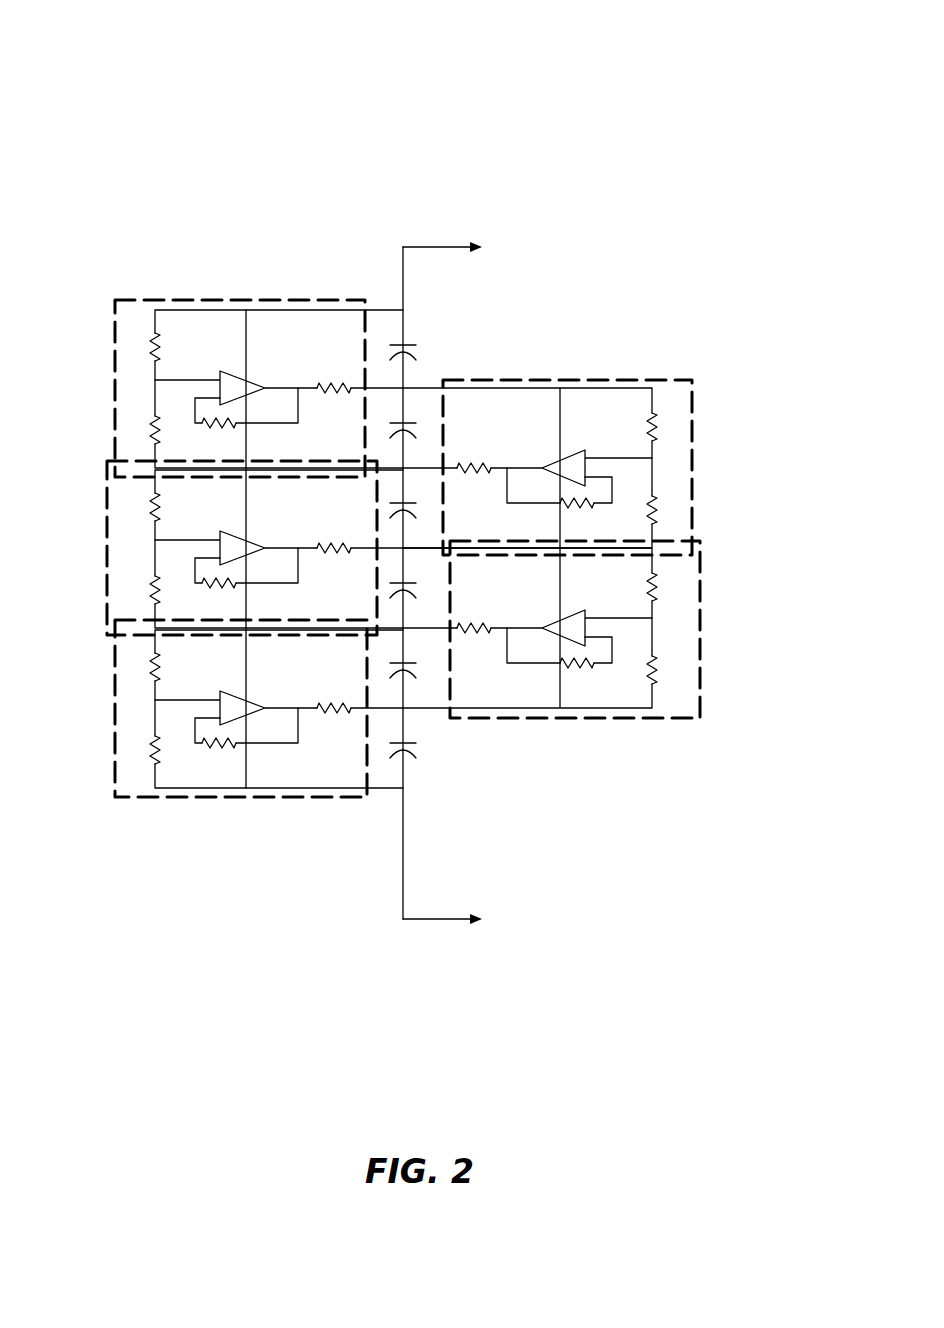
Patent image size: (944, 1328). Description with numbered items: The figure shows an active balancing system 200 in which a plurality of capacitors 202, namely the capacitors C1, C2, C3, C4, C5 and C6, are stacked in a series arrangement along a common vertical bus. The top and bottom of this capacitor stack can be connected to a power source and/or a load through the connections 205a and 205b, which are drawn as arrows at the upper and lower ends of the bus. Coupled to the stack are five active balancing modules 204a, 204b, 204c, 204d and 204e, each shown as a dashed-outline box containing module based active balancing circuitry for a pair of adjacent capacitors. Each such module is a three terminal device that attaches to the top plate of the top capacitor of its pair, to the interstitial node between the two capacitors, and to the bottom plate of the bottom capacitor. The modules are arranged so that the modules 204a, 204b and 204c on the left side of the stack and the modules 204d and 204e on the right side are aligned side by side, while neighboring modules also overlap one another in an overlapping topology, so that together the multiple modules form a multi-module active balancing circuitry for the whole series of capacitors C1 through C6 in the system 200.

The active balancing system 200 is at (738, 83).
The capacitors 202 is at (422, 350).
The active balancing module 204a is at (115, 300).
The active balancing module 204b is at (107, 462).
The active balancing module 204c is at (115, 682).
The active balancing module 204d is at (692, 382).
The active balancing module 204e is at (700, 604).
The connection 205a is at (475, 247).
The connection 205b is at (475, 920).
The capacitor C1 is at (413, 339).
The capacitor C2 is at (413, 418).
The capacitor C3 is at (413, 498).
The capacitor C4 is at (413, 578).
The capacitor C5 is at (413, 658).
The capacitor C6 is at (413, 737).